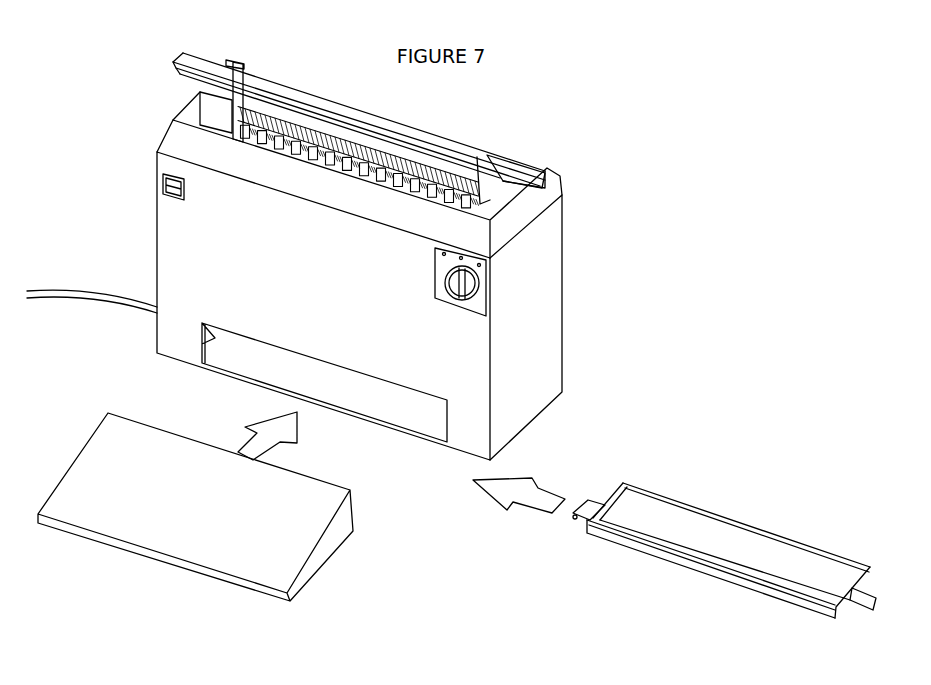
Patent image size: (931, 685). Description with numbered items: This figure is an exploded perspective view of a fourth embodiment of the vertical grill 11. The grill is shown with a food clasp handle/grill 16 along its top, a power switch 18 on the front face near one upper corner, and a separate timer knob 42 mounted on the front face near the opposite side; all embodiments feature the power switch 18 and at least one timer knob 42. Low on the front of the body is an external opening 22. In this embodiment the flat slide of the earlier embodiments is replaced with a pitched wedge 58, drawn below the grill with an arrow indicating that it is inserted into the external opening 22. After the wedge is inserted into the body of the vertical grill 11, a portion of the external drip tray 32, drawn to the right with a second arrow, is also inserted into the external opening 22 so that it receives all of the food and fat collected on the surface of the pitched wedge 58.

The vertical grill 11 is at (733, 107).
The food clasp handle/grill 16 is at (178, 81).
The power switch 18 is at (162, 188).
The external opening 22 is at (225, 354).
The timer knob 42 is at (482, 272).
The pitched wedge 58 is at (341, 530).
The external drip tray 32 is at (622, 537).